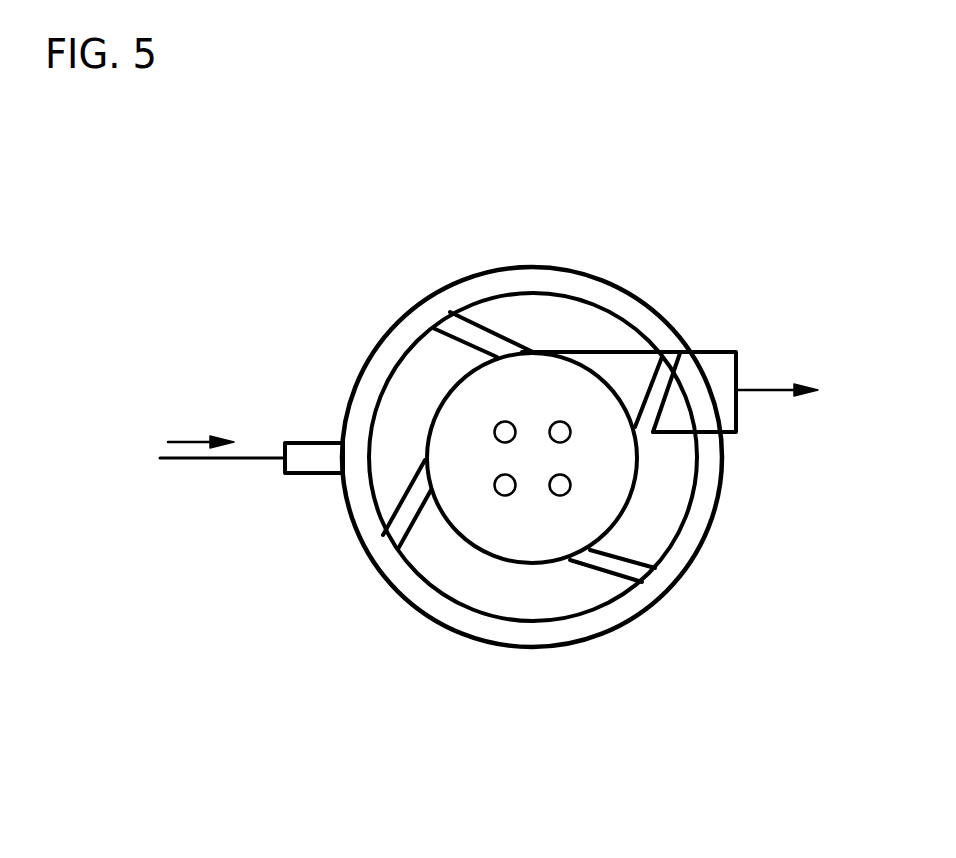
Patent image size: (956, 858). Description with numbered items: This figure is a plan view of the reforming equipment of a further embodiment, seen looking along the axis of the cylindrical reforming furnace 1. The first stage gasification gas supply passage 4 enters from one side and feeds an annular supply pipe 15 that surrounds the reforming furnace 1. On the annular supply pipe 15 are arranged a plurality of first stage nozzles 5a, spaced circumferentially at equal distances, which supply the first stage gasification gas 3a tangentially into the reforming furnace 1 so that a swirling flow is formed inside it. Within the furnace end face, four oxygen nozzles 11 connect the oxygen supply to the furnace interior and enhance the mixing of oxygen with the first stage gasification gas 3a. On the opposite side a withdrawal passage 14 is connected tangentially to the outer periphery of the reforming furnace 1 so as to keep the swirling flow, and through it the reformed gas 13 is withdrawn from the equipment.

The reforming furnace 1 is at (443, 393).
The first stage gasification gas 3a is at (192, 443).
The first stage gasification gas supply passage 4 is at (232, 460).
The first stage nozzles 5a is at (475, 333).
The oxygen nozzles 11 is at (552, 440).
The reformed gas 13 is at (780, 390).
The withdrawal passage 14 is at (737, 353).
The annular supply pipe 15 is at (592, 275).